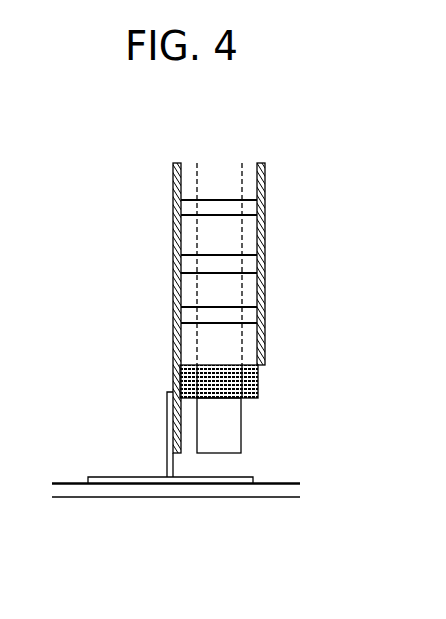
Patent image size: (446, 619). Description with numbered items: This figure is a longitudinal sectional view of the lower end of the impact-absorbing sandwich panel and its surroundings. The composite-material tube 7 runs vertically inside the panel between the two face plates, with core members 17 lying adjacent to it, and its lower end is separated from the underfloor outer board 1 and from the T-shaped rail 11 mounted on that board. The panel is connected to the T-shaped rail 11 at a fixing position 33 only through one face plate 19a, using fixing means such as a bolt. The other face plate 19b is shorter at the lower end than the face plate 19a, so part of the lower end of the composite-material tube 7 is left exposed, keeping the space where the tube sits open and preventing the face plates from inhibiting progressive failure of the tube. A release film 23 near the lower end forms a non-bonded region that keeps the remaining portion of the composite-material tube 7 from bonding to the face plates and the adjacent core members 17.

The underfloor outer board 1 is at (270, 498).
The composite-material tube 7 is at (222, 457).
The T-shaped rail 11 is at (95, 473).
The core member 17 is at (221, 308).
The face plate 19a is at (177, 278).
The face plate 19b is at (265, 230).
The release film 23 is at (258, 383).
The fixing position 33 is at (202, 423).